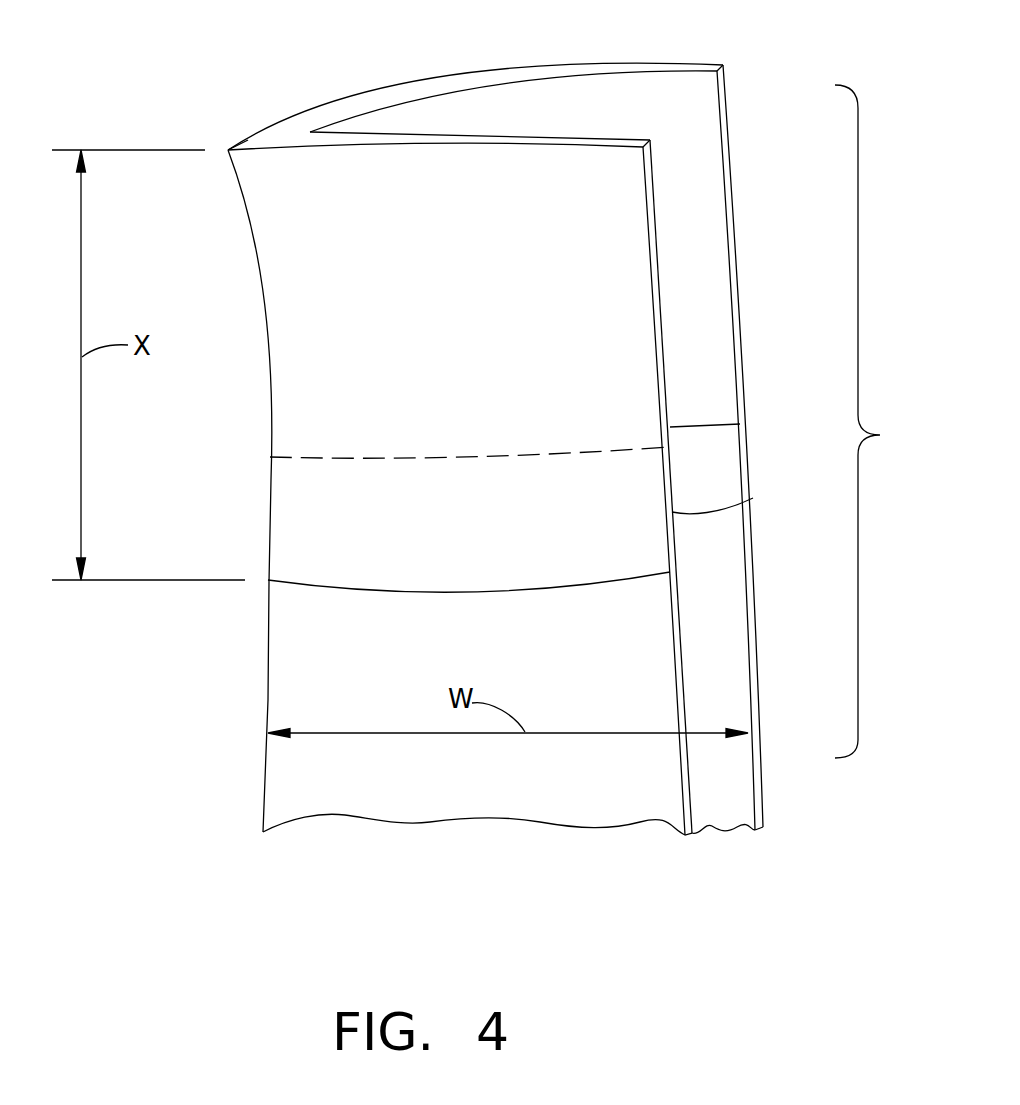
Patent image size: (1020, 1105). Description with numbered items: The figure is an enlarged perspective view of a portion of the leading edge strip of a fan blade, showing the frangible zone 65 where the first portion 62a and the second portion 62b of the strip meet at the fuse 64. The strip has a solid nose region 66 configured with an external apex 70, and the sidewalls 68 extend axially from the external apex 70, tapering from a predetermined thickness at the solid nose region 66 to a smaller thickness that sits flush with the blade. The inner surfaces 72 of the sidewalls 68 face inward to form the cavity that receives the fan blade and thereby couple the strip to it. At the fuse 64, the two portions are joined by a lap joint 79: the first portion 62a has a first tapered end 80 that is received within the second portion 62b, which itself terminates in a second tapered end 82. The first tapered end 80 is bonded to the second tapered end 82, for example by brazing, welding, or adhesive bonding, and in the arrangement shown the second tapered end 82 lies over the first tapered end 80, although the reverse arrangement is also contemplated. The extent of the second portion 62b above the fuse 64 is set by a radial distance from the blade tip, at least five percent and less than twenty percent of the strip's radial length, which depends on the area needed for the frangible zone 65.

The first portion 62a is at (486, 642).
The second portion 62b is at (486, 358).
The fuse 64 is at (713, 466).
The frangible zone 65 is at (880, 435).
The solid nose region 66 is at (283, 138).
The sidewall 68 is at (657, 68).
The external apex 70 is at (268, 648).
The inner surface 72 is at (695, 217).
The lap joint 79 is at (748, 463).
The first tapered end 80 is at (718, 545).
The second tapered end 82 is at (312, 520).